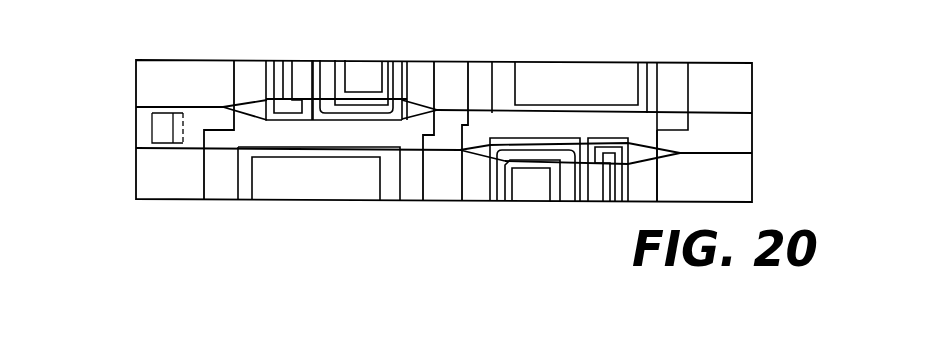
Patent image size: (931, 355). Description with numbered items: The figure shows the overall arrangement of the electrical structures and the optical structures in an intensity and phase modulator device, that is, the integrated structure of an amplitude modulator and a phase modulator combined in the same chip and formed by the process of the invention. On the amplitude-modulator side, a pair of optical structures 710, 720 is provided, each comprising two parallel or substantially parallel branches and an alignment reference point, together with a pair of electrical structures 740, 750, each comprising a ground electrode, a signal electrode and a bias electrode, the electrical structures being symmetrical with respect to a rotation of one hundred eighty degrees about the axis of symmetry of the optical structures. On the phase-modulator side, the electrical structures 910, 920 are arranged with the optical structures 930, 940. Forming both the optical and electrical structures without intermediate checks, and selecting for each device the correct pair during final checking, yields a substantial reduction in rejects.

The optical structure 710 is at (180, 105).
The optical structure 720 is at (725, 155).
The electrical structure 740 is at (322, 47).
The electrical structure 750 is at (500, 207).
The electrical structure 910 is at (596, 52).
The electrical structure 920 is at (264, 207).
The optical structure 930 is at (727, 110).
The optical structure 940 is at (162, 148).